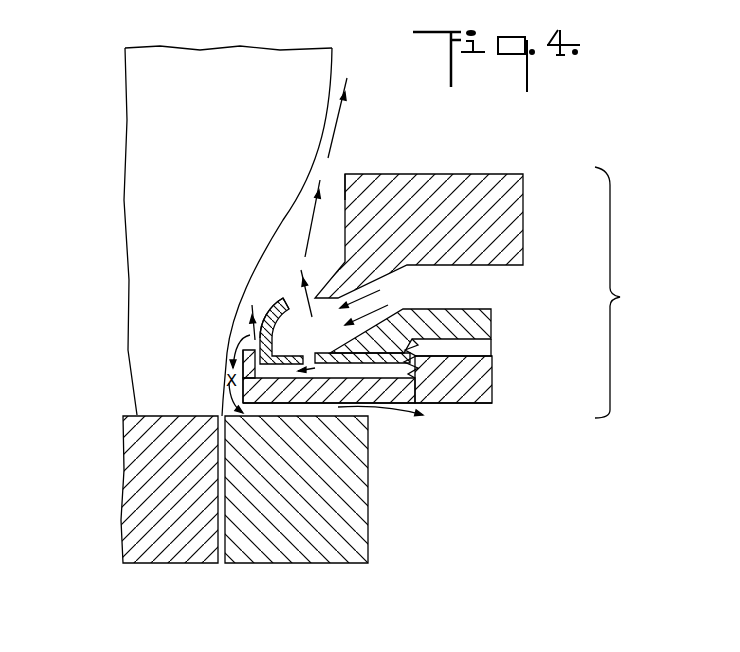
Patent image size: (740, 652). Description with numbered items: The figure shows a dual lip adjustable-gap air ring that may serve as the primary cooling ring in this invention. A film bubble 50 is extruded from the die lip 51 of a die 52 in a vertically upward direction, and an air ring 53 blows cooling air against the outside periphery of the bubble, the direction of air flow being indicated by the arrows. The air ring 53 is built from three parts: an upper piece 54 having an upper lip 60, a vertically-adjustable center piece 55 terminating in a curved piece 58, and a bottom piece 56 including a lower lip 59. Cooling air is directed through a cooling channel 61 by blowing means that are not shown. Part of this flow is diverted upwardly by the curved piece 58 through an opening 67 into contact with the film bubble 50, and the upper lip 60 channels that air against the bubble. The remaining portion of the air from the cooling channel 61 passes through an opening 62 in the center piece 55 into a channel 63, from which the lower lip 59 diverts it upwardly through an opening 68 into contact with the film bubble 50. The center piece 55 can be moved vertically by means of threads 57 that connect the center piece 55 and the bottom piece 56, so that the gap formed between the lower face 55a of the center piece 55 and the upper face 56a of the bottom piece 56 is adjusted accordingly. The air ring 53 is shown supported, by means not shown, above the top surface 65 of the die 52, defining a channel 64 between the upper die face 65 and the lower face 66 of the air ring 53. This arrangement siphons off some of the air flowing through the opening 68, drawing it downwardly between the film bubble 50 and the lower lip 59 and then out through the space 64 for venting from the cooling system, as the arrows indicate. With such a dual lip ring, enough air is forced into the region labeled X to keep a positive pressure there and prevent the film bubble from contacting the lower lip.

The film bubble 50 is at (327, 118).
The die lip 51 is at (218, 413).
The die 52 is at (108, 469).
The air ring 53 is at (626, 292).
The upper piece 54 is at (465, 185).
The center piece 55 is at (485, 321).
The lower face 55a is at (453, 375).
The bottom piece 56 is at (480, 378).
The upper face 56a is at (368, 379).
The threads 57 is at (420, 340).
The curved piece 58 is at (278, 302).
The lower lip 59 is at (240, 356).
The upper lip 60 is at (345, 181).
The cooling channel 61 is at (419, 273).
The opening 62 is at (312, 359).
The channel 63 is at (261, 408).
The channel 64 is at (332, 413).
The top surface 65 is at (294, 410).
The lower face 66 is at (470, 406).
The opening 67 is at (297, 297).
The opening 68 is at (239, 323).